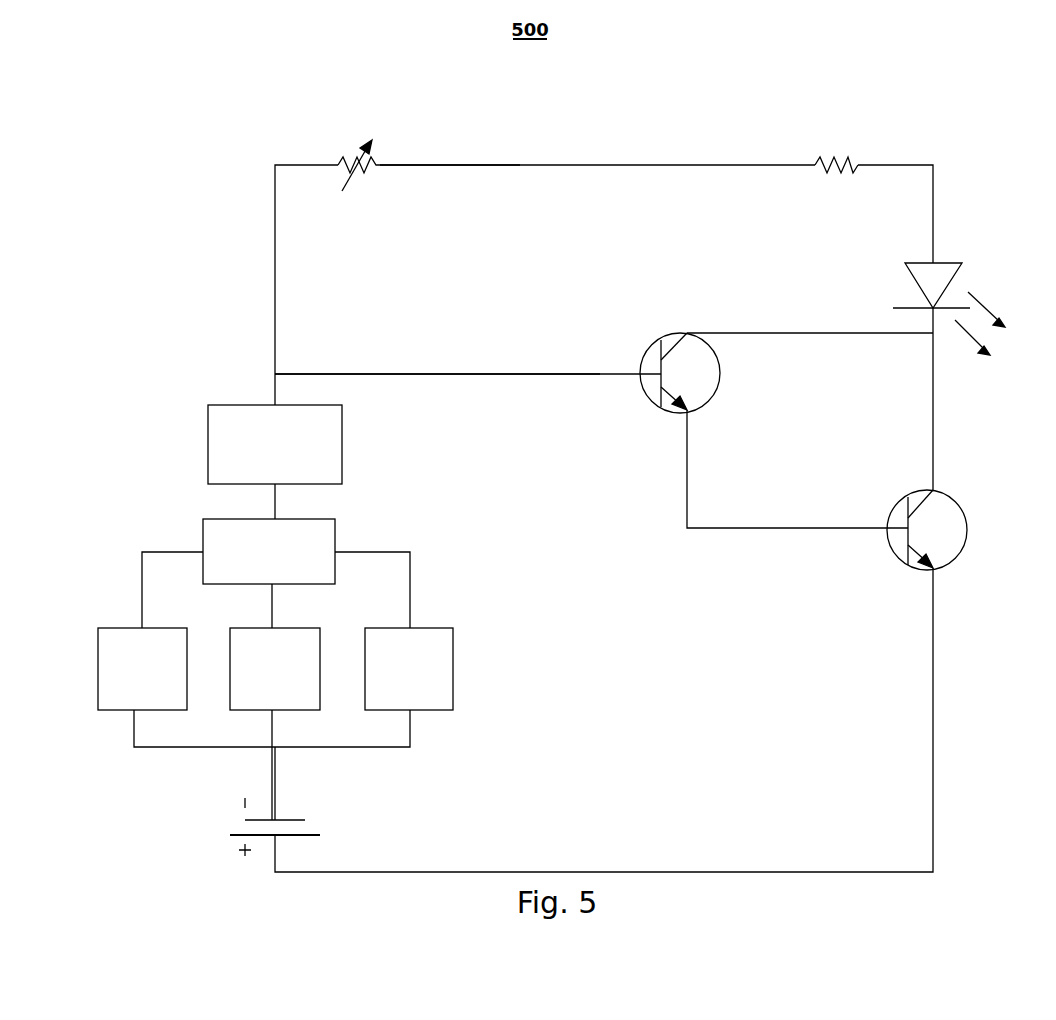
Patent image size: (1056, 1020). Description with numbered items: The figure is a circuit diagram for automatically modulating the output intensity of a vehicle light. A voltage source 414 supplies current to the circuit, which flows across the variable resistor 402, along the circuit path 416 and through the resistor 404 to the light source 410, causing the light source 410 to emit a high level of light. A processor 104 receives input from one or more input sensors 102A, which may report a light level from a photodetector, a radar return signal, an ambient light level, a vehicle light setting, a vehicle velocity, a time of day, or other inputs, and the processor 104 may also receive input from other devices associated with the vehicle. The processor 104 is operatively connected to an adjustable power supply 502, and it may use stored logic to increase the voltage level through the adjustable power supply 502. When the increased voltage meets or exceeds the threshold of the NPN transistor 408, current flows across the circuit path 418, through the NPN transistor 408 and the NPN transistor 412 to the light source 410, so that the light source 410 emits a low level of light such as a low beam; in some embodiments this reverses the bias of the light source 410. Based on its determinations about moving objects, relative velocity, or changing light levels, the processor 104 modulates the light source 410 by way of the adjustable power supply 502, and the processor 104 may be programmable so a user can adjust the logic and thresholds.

The variable resistor 402 is at (338, 165).
The circuit path 416 is at (428, 165).
The resistor 404 is at (815, 165).
The light source 410 is at (905, 263).
The NPN transistor 408 is at (665, 337).
The circuit path 418 is at (431, 374).
The NPN transistor 412 is at (960, 505).
The adjustable power supply 502 is at (275, 444).
The processor 104 is at (269, 551).
The input sensor 102A is at (275, 669).
The voltage source 414 is at (305, 835).